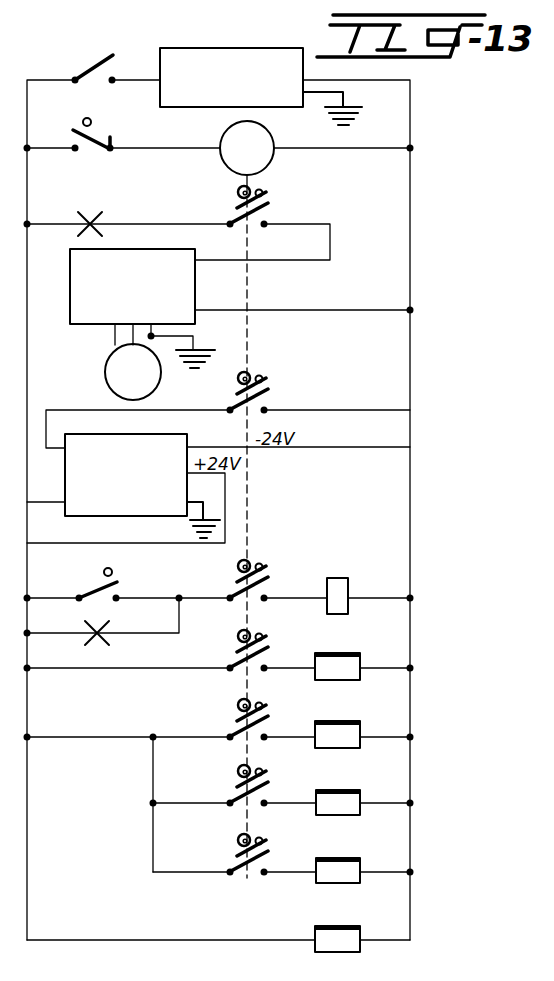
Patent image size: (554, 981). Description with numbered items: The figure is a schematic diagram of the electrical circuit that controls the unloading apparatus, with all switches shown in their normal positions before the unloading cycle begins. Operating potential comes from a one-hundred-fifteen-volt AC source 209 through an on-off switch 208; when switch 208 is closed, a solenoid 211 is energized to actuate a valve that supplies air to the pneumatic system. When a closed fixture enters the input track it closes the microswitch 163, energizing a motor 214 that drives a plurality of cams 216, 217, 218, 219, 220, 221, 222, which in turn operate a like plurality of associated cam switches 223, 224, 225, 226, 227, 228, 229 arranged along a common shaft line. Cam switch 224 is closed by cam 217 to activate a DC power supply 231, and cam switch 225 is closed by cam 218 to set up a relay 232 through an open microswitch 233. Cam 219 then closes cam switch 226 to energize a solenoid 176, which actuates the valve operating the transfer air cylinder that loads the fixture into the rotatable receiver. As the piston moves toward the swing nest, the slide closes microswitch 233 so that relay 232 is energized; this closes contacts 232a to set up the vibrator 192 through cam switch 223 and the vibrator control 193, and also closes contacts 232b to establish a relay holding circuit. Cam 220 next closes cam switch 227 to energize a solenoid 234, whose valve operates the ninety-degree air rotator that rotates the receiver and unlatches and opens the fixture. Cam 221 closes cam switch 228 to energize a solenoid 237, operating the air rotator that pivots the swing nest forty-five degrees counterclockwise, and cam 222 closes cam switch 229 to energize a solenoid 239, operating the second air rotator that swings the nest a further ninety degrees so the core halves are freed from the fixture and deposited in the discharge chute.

The on-off switch 208 is at (93, 67).
The 115 V AC source 209 is at (192, 32).
The microswitch 163 is at (113, 138).
The motor 214 is at (276, 128).
The cam 216 is at (262, 188).
The cam switch 223 is at (232, 210).
The contacts 232a is at (82, 222).
The vibrator control 193 is at (70, 312).
The vibrator 192 is at (108, 386).
The cam 217 is at (262, 370).
The cam switch 224 is at (234, 400).
The DC power supply 231 is at (180, 434).
The cam 218 is at (254, 564).
The cam switch 225 is at (235, 592).
The relay 232 is at (331, 577).
The microswitch 233 is at (86, 590).
The contacts 232b is at (98, 642).
The cam 219 is at (258, 634).
The cam switch 226 is at (235, 658).
The solenoid 176 is at (343, 654).
The cam 220 is at (258, 702).
The cam switch 227 is at (235, 722).
The solenoid 234 is at (355, 720).
The cam 221 is at (258, 770).
The cam switch 228 is at (232, 794).
The solenoid 237 is at (352, 790).
The cam 222 is at (260, 838).
The cam switch 229 is at (235, 855).
The solenoid 239 is at (352, 858).
The solenoid 211 is at (352, 926).